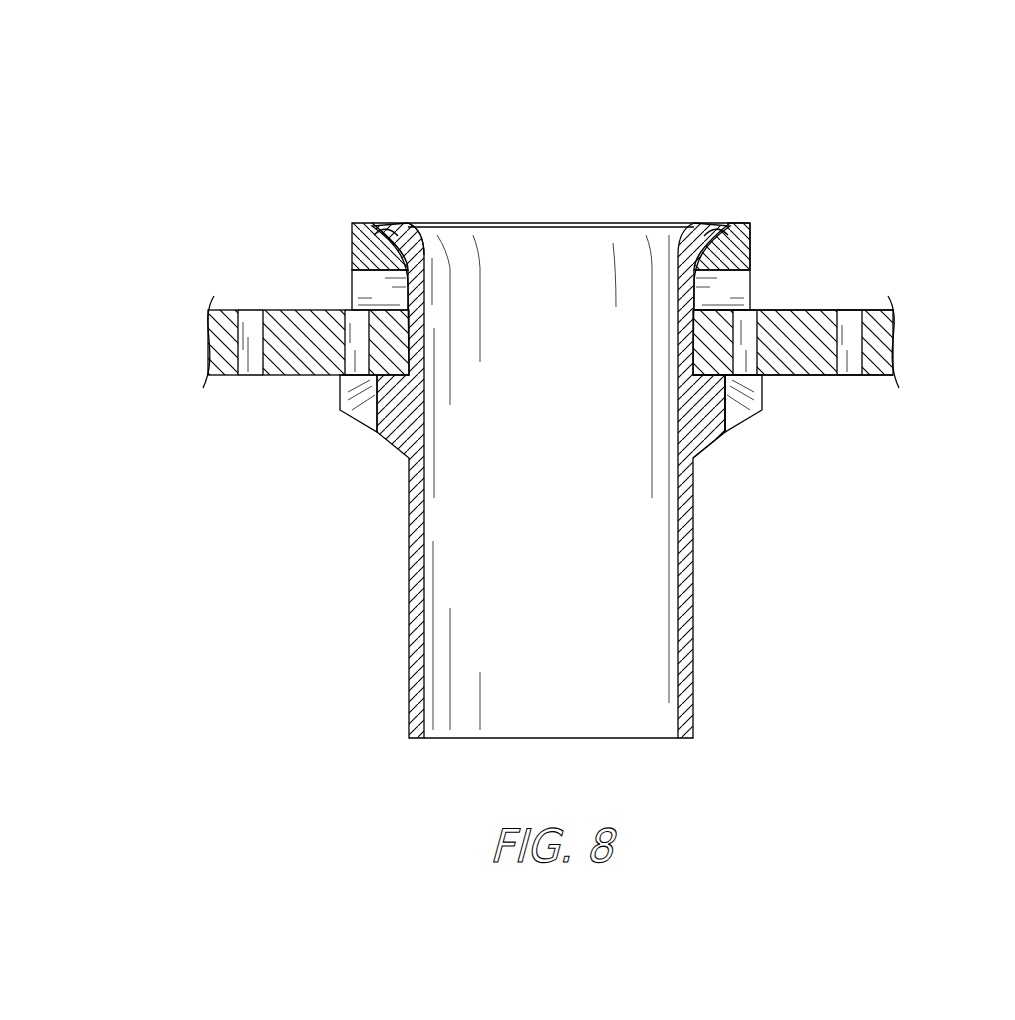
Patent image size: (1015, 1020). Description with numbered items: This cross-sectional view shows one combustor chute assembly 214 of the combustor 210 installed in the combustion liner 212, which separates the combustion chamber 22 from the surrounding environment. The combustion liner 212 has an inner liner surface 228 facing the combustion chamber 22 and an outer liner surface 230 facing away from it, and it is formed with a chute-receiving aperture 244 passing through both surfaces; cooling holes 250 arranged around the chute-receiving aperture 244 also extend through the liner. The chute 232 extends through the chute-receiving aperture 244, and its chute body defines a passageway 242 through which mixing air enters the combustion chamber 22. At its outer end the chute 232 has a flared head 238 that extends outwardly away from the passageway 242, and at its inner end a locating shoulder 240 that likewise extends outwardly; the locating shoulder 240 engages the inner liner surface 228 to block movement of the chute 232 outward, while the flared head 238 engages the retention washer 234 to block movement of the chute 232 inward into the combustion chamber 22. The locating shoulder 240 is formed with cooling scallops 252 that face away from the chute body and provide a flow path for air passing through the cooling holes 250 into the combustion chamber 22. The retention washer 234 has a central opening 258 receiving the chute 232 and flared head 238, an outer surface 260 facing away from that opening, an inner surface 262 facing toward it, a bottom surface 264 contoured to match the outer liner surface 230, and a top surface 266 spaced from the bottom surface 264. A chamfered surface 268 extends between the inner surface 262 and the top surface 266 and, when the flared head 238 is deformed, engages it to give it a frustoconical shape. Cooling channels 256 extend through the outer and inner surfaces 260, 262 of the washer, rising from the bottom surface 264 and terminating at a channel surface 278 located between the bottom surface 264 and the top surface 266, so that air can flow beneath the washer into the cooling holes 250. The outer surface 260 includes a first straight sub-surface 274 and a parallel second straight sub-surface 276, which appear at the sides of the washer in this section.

The combustion chamber 22 is at (840, 514).
The combustor 210 is at (910, 162).
The combustion liner 212 is at (880, 300).
The combustor chute assembly 214 is at (160, 572).
The inner liner surface 228 is at (813, 377).
The outer liner surface 230 is at (832, 310).
The chute 232 is at (357, 617).
The retention washer 234 is at (335, 248).
The flared head 238 is at (405, 240).
The locating shoulder 240 is at (707, 430).
The passageway 242 is at (533, 400).
The chute-receiving aperture 244 is at (668, 345).
The cooling holes 250 is at (345, 360).
The cooling scallops 252 is at (360, 410).
The cooling channels 256 is at (350, 290).
The central opening 258 is at (489, 260).
The outer surface 260 is at (751, 230).
The inner surface 262 is at (650, 340).
The bottom surface 264 is at (760, 317).
The top surface 266 is at (742, 223).
The chamfered surface 268 is at (700, 232).
The first straight sub-surface 274 is at (751, 257).
The second straight sub-surface 276 is at (350, 228).
The channel surface 278 is at (368, 272).